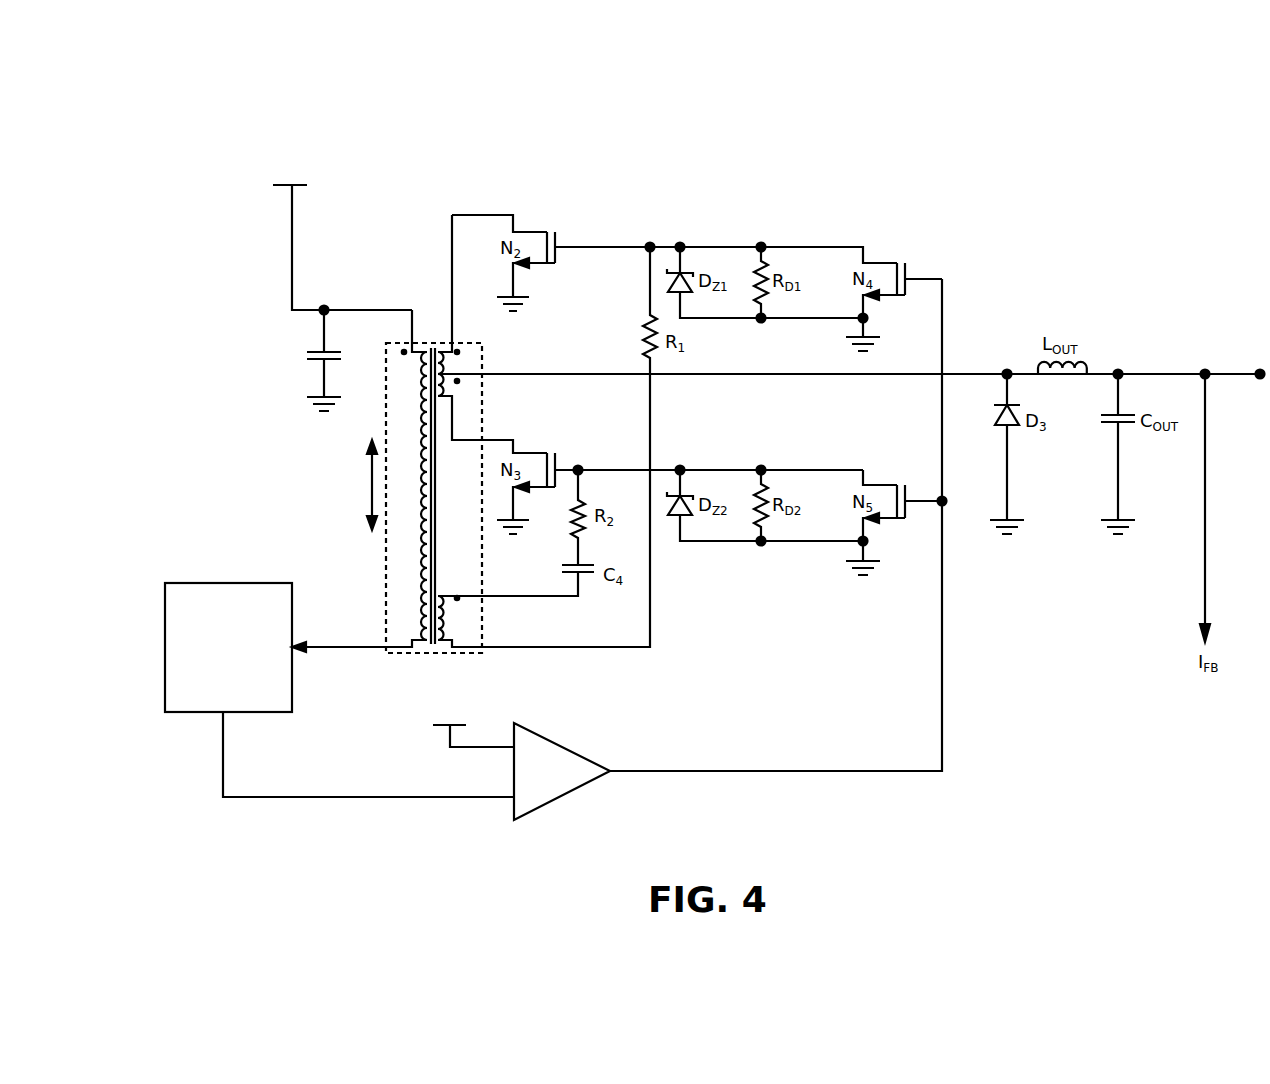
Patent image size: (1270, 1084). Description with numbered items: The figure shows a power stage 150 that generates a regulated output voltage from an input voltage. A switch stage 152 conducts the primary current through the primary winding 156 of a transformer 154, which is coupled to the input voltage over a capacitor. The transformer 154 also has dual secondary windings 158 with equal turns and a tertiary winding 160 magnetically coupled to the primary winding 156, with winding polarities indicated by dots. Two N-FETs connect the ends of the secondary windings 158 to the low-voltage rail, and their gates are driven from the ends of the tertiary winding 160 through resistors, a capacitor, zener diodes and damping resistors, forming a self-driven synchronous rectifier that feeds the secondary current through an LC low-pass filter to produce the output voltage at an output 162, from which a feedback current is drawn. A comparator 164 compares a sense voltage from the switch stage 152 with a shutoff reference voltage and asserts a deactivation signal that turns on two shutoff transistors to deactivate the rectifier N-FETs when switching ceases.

The power stage 150 is at (300, 128).
The switch stage 152 is at (228, 583).
The transformer 154 is at (437, 343).
The primary winding 156 is at (400, 545).
The secondary windings 158 is at (470, 405).
The tertiary winding 160 is at (465, 640).
The output 162 is at (1165, 345).
The comparator 164 is at (548, 733).